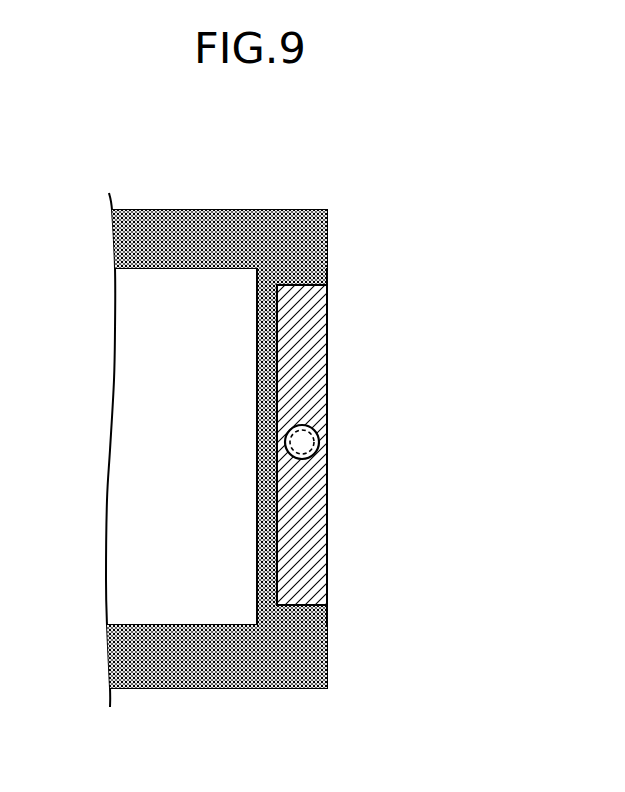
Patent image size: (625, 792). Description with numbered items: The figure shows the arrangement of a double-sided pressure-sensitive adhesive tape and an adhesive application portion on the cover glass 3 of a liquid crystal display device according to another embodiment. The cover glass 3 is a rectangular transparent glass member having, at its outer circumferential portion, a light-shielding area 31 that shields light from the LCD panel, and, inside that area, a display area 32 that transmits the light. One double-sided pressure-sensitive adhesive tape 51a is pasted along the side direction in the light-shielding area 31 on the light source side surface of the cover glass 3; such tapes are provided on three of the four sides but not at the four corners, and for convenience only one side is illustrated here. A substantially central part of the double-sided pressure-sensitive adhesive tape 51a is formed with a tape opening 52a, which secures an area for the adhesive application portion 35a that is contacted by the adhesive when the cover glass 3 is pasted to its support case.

The cover glass 3 is at (298, 186).
The light-shielding area 31 is at (195, 236).
The display area 32 is at (187, 605).
The double-sided pressure-sensitive adhesive tape 51a is at (313, 340).
The tape opening 52a is at (313, 431).
The adhesive application portion 35a is at (302, 442).